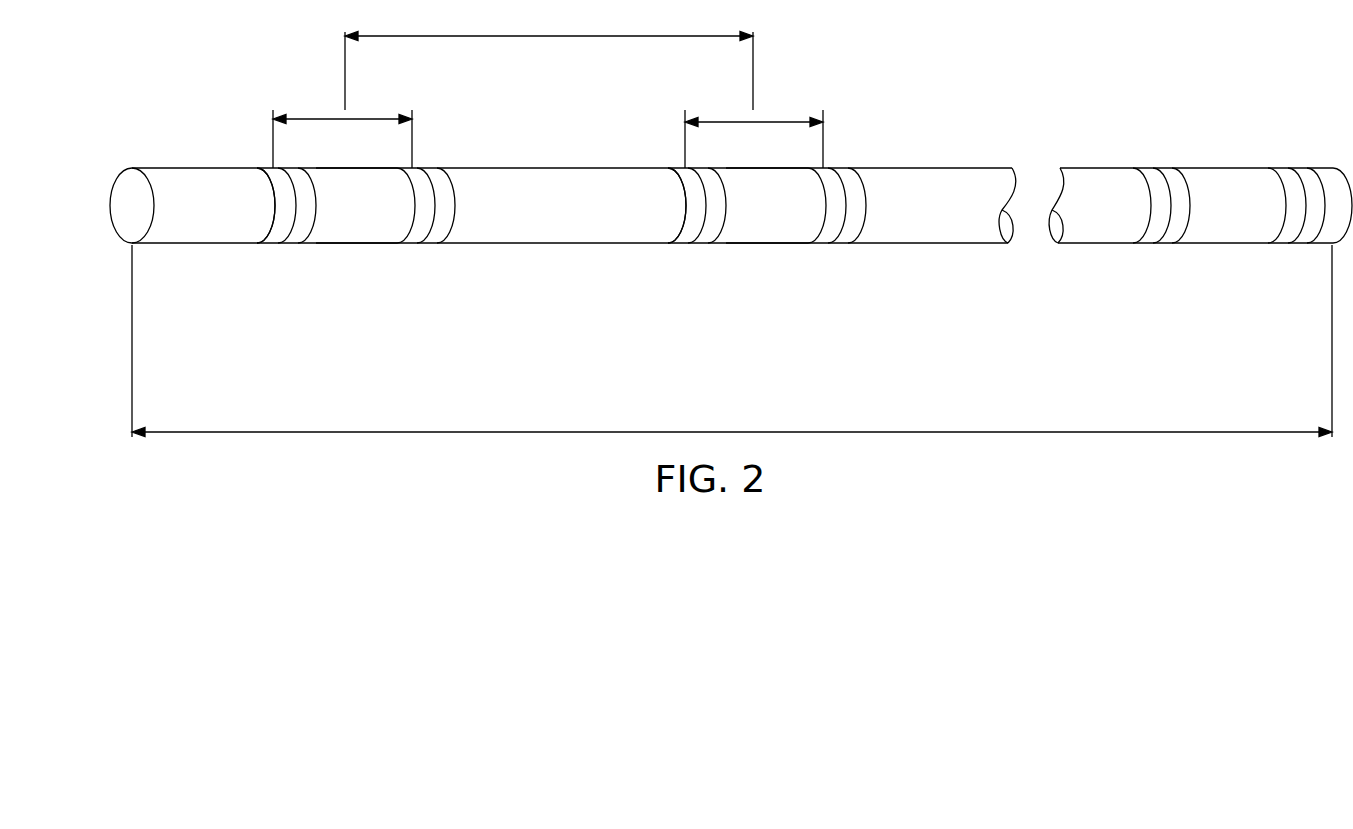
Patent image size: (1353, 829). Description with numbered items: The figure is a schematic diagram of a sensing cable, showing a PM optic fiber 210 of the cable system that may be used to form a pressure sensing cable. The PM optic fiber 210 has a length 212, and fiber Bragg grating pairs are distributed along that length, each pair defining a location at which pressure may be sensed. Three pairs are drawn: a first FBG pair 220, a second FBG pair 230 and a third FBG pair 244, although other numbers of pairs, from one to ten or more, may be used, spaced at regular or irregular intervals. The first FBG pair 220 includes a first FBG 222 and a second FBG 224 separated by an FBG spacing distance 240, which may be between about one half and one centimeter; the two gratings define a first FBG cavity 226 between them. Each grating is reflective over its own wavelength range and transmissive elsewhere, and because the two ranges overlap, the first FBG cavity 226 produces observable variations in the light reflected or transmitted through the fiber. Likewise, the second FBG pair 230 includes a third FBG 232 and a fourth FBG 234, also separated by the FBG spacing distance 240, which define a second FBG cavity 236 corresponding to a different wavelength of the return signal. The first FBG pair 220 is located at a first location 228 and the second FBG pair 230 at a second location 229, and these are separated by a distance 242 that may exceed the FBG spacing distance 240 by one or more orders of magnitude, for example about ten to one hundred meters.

The PM optic fiber 210 is at (183, 62).
The length 212 is at (732, 341).
The first FBG pair 220 is at (348, 284).
The first FBG 222 is at (271, 246).
The second FBG 224 is at (416, 241).
The first FBG cavity 226 is at (353, 255).
The first location 228 is at (436, 153).
The second location 229 is at (670, 153).
The second FBG pair 230 is at (750, 284).
The third FBG 232 is at (663, 246).
The fourth FBG 234 is at (837, 241).
The second FBG cavity 236 is at (765, 255).
The FBG spacing distance 240 is at (320, 117).
The distance 242 is at (549, 59).
The third FBG pair 244 is at (1128, 266).